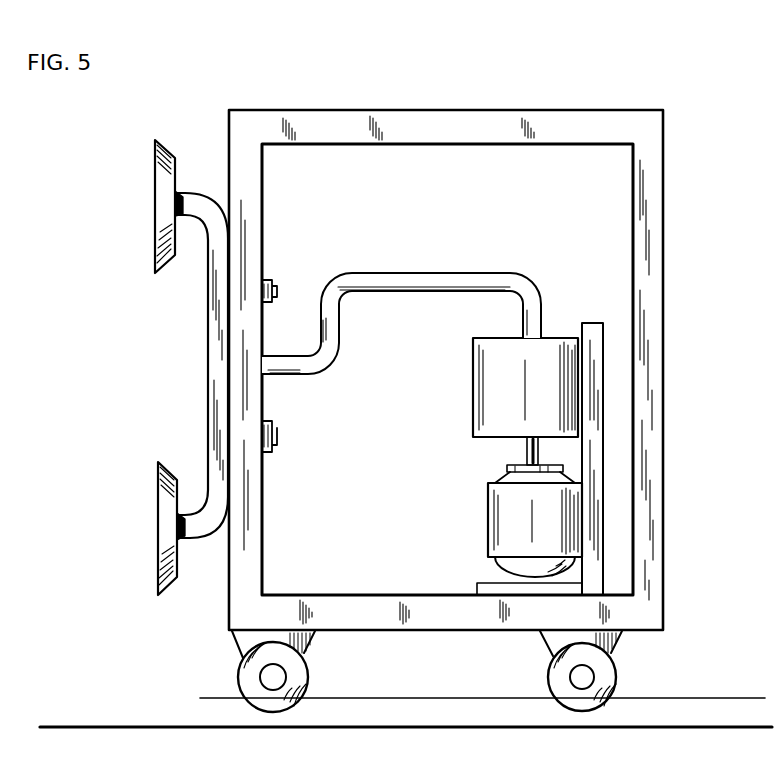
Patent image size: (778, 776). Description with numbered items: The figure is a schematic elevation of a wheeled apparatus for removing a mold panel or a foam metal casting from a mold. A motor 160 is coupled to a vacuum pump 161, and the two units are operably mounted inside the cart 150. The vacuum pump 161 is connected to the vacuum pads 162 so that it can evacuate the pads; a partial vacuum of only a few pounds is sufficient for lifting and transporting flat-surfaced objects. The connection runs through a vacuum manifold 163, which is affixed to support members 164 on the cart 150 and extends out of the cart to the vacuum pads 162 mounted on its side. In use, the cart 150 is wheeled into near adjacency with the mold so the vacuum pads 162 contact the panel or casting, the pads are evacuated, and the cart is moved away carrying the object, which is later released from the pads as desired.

The cart 150 is at (663, 240).
The motor 160 is at (488, 522).
The vacuum pump 161 is at (473, 390).
The vacuum pads 162 is at (155, 206).
The vacuum manifold 163 is at (208, 353).
The support members 164 is at (266, 283).